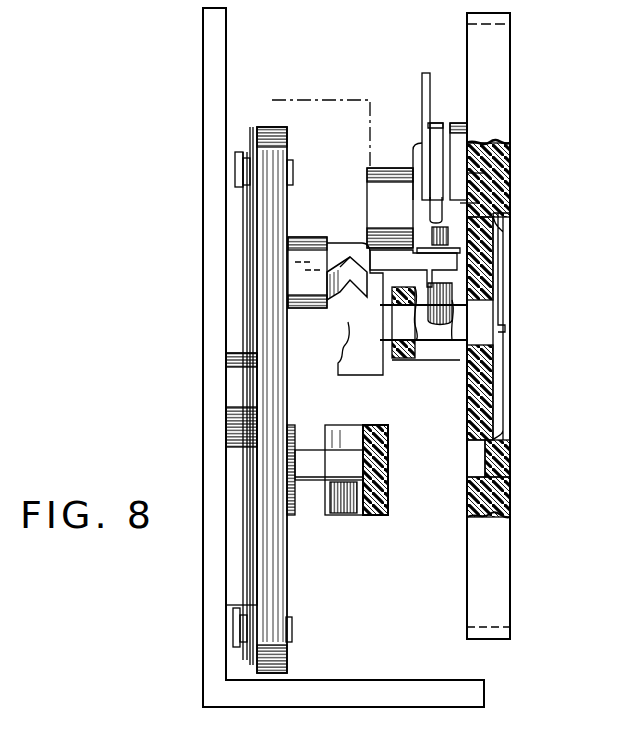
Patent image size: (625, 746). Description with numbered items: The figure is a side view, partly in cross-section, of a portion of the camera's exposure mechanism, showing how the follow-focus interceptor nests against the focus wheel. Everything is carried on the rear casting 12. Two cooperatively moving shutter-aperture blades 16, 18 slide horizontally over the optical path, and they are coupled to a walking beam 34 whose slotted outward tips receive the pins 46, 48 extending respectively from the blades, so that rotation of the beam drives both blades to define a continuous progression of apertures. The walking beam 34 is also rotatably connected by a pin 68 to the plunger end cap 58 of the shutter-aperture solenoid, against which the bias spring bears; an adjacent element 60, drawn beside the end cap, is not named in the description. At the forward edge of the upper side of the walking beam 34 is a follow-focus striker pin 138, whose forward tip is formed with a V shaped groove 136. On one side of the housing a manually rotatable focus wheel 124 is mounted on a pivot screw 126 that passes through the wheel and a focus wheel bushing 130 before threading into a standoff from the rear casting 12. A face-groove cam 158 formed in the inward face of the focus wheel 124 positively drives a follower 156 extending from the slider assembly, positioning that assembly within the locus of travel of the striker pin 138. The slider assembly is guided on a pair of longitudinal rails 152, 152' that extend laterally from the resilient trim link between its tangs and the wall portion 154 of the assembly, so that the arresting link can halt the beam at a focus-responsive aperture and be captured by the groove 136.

The rear casting 12 is at (204, 458).
The shutter-aperture blade 16 is at (243, 225).
The shutter-aperture blade 18 is at (262, 283).
The walking beam 34 is at (285, 210).
The pin 46 is at (235, 638).
The pin 48 is at (237, 172).
The plunger end cap 58 is at (390, 450).
The pulley 60 is at (352, 428).
The pin 68 is at (307, 456).
The focus wheel 124 is at (503, 105).
The pivot screw 126 is at (498, 395).
The focus wheel bushing 130 is at (483, 320).
The V shaped slot or groove 136 is at (332, 290).
The follow-focus striker pin 138 is at (310, 238).
The longitudinal rail 152 is at (425, 167).
The longitudinal rail 152' is at (499, 300).
The wall portion 154 is at (505, 198).
The follower 156 is at (495, 256).
The face-groove cam 158 is at (480, 178).